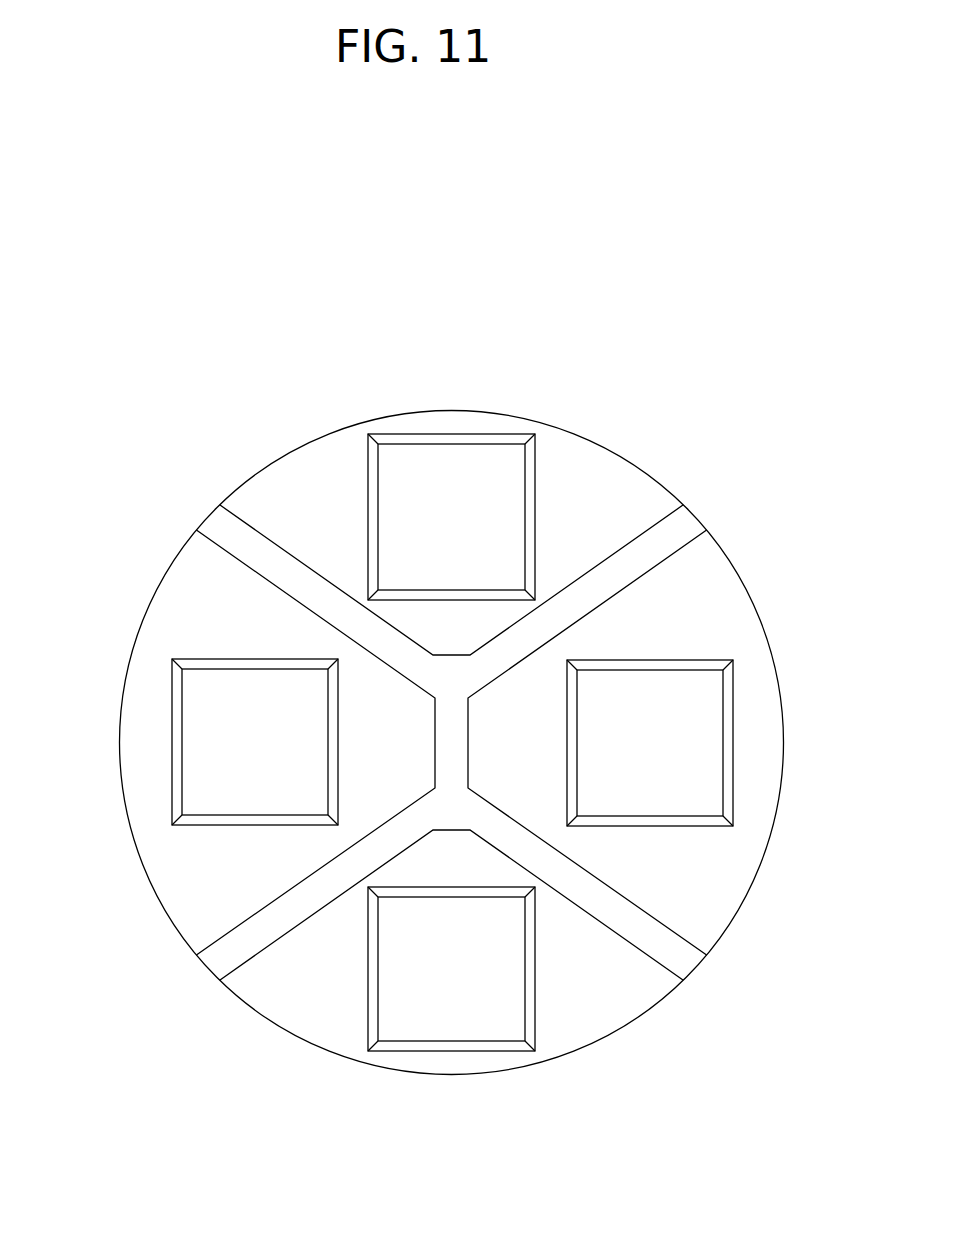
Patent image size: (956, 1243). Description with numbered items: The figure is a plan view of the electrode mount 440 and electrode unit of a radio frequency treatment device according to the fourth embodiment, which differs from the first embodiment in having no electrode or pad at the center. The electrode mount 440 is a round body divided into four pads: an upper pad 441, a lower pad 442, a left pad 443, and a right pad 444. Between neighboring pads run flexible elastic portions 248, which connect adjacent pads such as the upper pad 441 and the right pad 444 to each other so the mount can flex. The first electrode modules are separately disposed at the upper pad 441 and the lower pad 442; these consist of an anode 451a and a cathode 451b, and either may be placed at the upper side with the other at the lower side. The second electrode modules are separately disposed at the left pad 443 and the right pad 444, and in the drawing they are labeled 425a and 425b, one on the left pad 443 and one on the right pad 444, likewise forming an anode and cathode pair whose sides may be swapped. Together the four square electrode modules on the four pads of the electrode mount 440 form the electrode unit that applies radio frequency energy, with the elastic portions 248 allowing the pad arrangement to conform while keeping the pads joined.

The electrode mount 440 is at (298, 450).
The upper pad 441 is at (612, 488).
The lower pad 442 is at (613, 995).
The left pad 443 is at (173, 600).
The right pad 444 is at (710, 575).
The elastic portions 248 is at (215, 957).
The anode 451a is at (455, 472).
The cathode 451b is at (488, 1022).
The third chip 425a is at (200, 738).
The fourth chip 425b is at (695, 747).